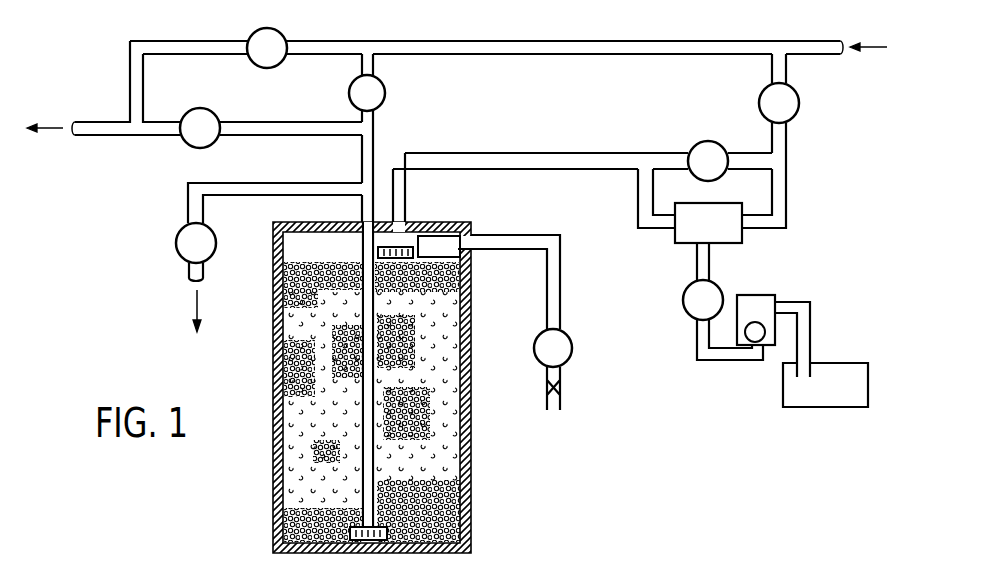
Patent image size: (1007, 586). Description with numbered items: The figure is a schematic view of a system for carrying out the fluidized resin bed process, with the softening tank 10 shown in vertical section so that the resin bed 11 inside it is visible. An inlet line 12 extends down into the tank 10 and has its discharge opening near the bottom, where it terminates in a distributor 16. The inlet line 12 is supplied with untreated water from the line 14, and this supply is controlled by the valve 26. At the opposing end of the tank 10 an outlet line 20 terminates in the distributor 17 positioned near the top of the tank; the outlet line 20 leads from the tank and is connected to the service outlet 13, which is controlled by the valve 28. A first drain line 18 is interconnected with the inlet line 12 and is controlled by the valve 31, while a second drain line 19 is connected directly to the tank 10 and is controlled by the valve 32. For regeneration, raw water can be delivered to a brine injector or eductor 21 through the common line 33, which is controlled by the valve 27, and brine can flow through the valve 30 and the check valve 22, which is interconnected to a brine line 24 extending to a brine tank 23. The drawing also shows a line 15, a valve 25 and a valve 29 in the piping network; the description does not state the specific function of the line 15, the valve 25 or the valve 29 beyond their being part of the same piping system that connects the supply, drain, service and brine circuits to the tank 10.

The softening tank 10 is at (273, 455).
The resin bed 11 is at (285, 362).
The inlet line 12 is at (363, 305).
The service outlet 13 is at (78, 122).
The line 14 is at (813, 38).
The gas line 15 is at (477, 153).
The distributor 16 is at (355, 547).
The distributor 17 is at (414, 240).
The first drain line 18 is at (188, 196).
The second drain line 19 is at (560, 270).
The outlet line 20 is at (407, 190).
The brine injector or eductor 21 is at (742, 243).
The check valve 22 is at (776, 292).
The brine tank 23 is at (783, 378).
The brine line 24 is at (812, 337).
The valve 25 is at (275, 29).
The valve 26 is at (386, 93).
The valve 27 is at (800, 104).
The valve 28 is at (186, 148).
The valve 29 is at (710, 141).
The valve 30 is at (683, 294).
The valve 31 is at (178, 247).
The valve 32 is at (568, 362).
The common line 33 is at (787, 142).